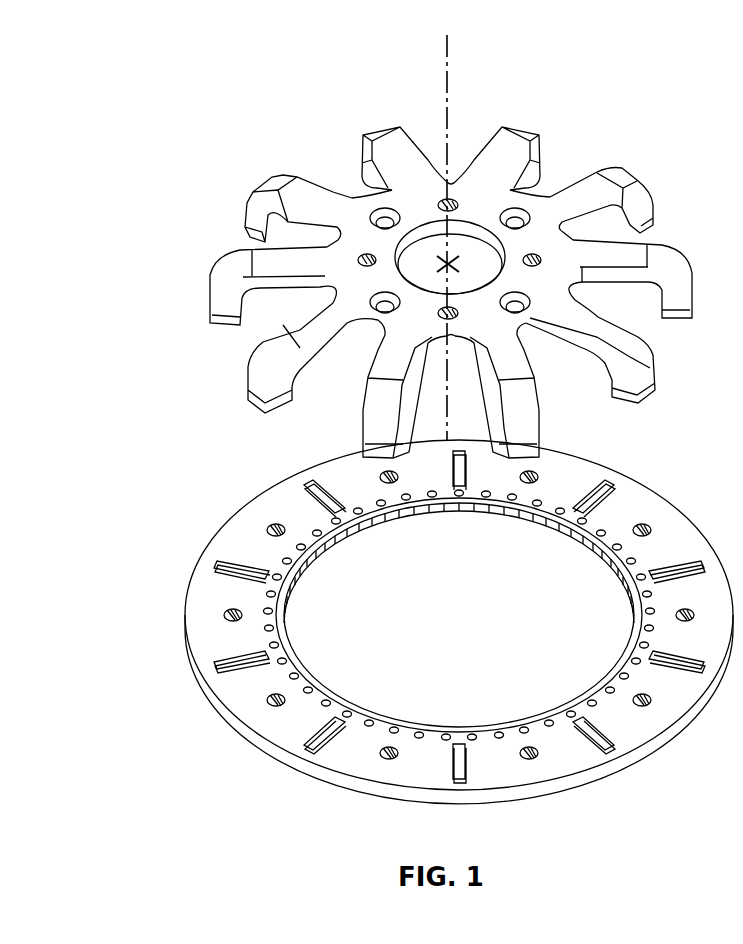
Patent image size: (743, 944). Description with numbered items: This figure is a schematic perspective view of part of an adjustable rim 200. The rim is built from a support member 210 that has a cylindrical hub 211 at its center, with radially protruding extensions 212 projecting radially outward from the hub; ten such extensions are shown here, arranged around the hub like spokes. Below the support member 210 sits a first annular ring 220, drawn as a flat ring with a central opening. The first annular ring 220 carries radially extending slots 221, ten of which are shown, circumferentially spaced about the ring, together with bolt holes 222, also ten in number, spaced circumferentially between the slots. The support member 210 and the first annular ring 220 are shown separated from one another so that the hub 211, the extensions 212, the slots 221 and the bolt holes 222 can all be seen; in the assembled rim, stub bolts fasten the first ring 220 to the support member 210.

The adjustable rim 200 is at (250, 132).
The support member 210 is at (598, 152).
The cylindrical hub 211 is at (487, 215).
The radially protruding extensions 212 is at (365, 165).
The first annular ring 220 is at (234, 521).
The radially extending slots 221 is at (220, 666).
The bolt holes 222 is at (600, 486).